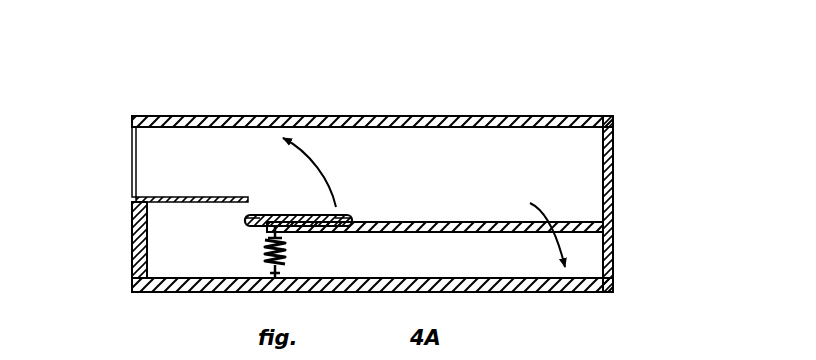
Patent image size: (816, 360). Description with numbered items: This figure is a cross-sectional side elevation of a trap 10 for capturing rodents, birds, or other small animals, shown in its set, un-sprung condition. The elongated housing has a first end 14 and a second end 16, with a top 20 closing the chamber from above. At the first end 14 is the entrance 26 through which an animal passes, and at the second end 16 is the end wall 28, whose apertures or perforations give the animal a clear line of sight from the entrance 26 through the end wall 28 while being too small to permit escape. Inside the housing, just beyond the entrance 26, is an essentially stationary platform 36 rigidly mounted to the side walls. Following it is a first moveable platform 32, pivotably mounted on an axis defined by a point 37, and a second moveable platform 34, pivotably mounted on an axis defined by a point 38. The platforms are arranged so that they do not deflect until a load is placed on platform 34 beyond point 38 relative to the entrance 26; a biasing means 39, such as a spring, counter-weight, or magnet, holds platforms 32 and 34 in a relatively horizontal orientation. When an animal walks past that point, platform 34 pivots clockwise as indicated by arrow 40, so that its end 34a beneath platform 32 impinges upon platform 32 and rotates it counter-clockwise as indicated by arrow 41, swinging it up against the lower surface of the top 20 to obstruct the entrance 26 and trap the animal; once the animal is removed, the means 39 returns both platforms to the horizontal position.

The trap 10 is at (633, 88).
The first end 14 is at (103, 127).
The second end 16 is at (636, 172).
The top 20 is at (405, 116).
The entrance 26 is at (133, 163).
The end wall 28 is at (613, 210).
The first moveable platform 32 is at (290, 215).
The second moveable platform 34 is at (445, 222).
The end of platform 34 34a is at (330, 232).
The stationary platform 36 is at (222, 197).
The point 37 is at (245, 221).
The point 38 is at (352, 218).
The biasing means 39 is at (263, 258).
The arrow 40 is at (548, 212).
The arrow 41 is at (318, 165).